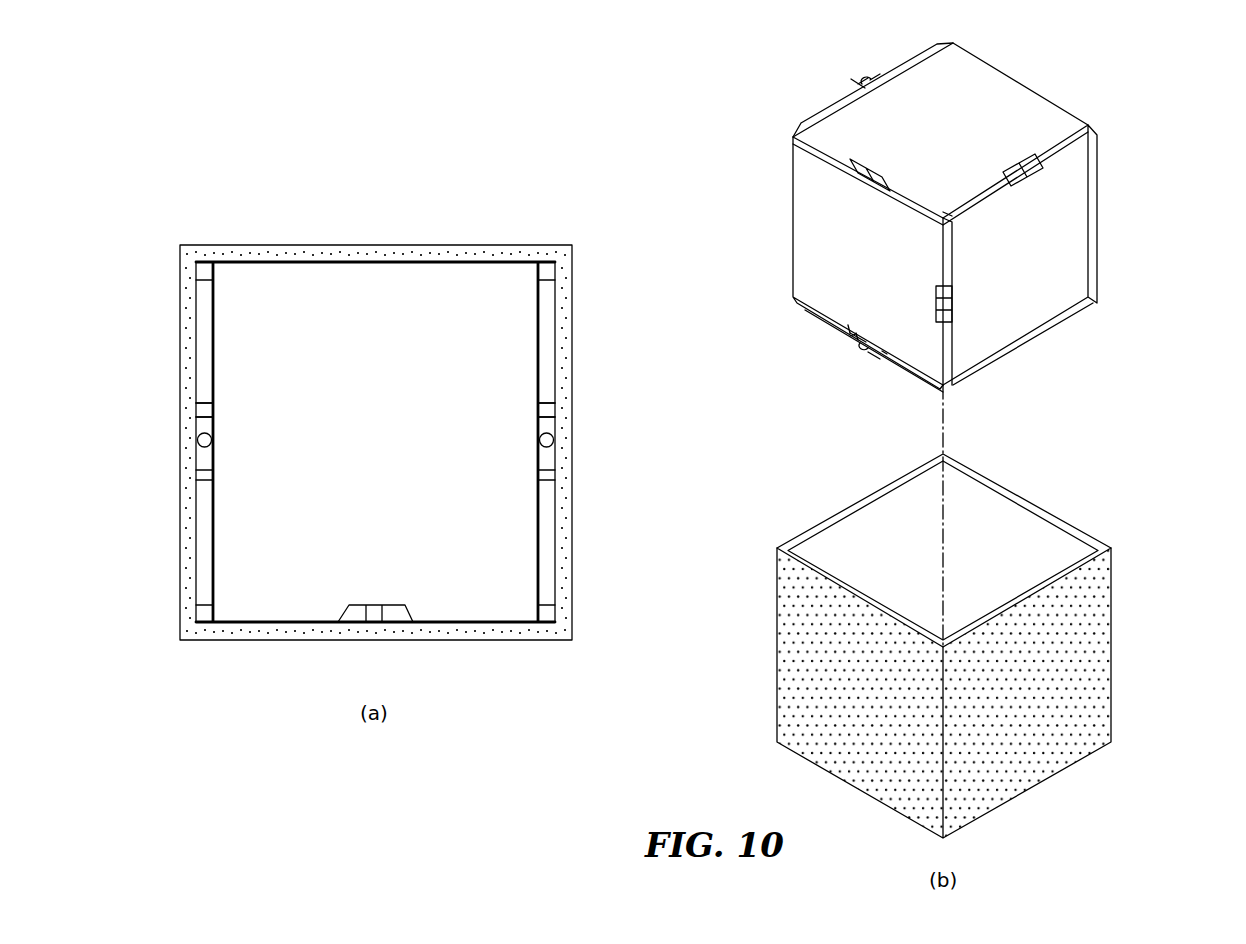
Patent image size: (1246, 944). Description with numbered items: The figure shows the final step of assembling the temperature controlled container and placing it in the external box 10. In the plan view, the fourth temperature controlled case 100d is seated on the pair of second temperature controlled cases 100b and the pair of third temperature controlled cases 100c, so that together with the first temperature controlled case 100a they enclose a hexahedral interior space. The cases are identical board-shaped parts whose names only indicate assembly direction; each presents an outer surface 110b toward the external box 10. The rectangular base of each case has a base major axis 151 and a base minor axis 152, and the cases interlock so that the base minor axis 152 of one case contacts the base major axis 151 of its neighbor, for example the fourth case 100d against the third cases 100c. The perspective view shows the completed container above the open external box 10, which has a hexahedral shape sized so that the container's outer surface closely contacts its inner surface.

The external box 10 is at (1065, 640).
The first temperature controlled case 100a is at (856, 362).
The second temperature controlled case 100b is at (556, 270).
The third temperature controlled case 100c is at (853, 76).
The fourth temperature controlled case 100d is at (992, 98).
The outer surface 110b is at (487, 343).
The base major axis 151 is at (213, 622).
The base minor axis 152 is at (538, 262).